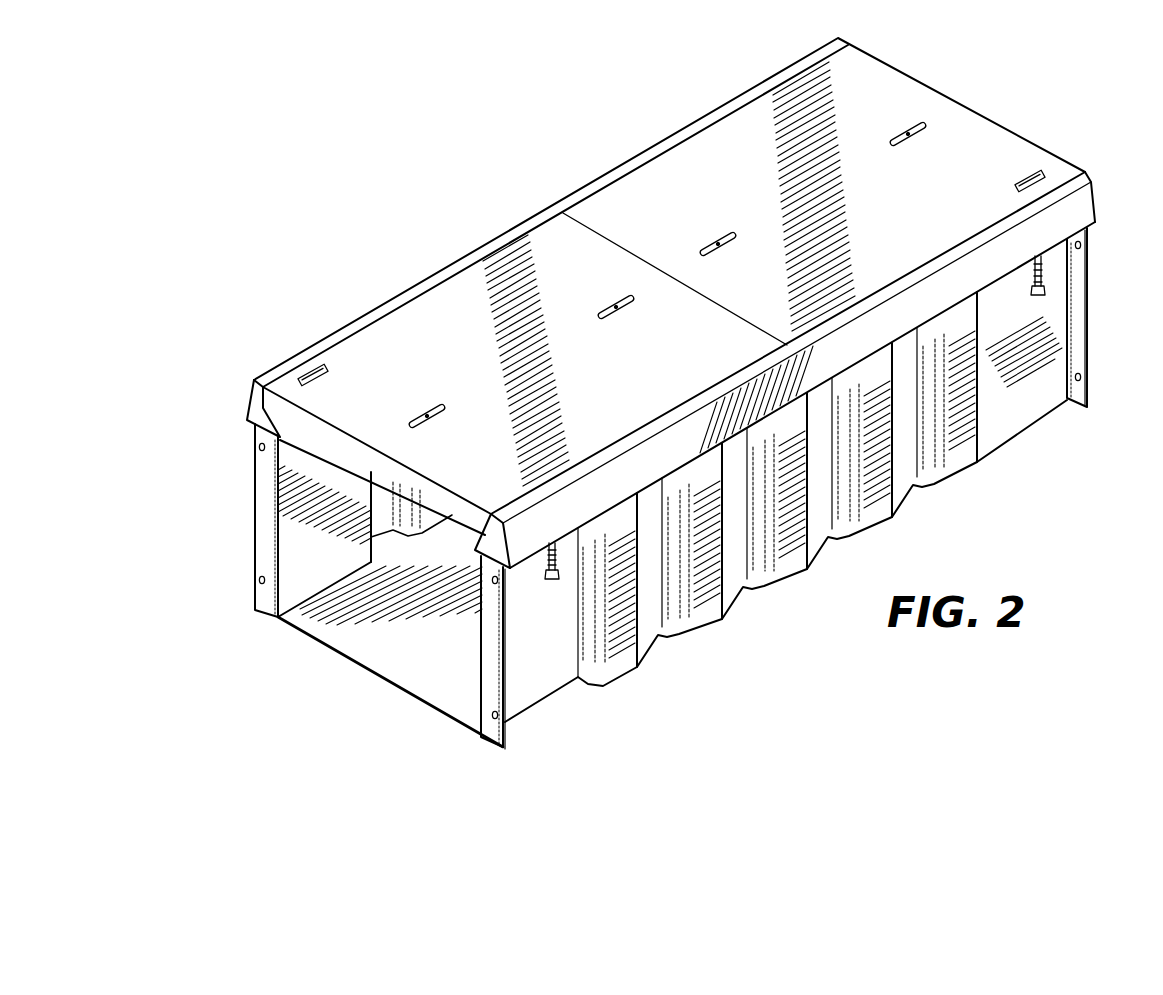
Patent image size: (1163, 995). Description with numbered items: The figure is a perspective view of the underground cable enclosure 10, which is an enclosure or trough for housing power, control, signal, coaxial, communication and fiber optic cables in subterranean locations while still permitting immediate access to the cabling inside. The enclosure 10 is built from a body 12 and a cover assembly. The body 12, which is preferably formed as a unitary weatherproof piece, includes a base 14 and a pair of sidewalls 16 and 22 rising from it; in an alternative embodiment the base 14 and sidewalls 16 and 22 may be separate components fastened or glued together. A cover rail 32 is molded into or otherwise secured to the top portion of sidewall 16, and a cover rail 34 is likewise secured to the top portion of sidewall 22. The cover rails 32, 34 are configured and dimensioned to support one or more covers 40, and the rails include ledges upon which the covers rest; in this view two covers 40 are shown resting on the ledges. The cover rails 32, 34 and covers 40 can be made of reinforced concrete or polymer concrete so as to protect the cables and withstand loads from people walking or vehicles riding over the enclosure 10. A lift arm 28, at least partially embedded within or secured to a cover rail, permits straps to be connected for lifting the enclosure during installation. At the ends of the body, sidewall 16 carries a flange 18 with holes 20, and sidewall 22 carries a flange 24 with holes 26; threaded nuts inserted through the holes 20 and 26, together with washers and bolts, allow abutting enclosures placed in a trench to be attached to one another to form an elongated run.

The underground cable enclosure 10 is at (252, 218).
The body 12 is at (293, 634).
The base 14 is at (365, 640).
The sidewall 16 is at (329, 567).
The flange 18 is at (256, 540).
The holes 20 is at (258, 448).
The sidewall 22 is at (1012, 417).
The flange 24 is at (492, 658).
The holes 26 is at (492, 579).
The lift arm 28 is at (552, 578).
The cover rail 32 is at (275, 370).
The cover rail 34 is at (1084, 190).
The cover 40 is at (625, 188).